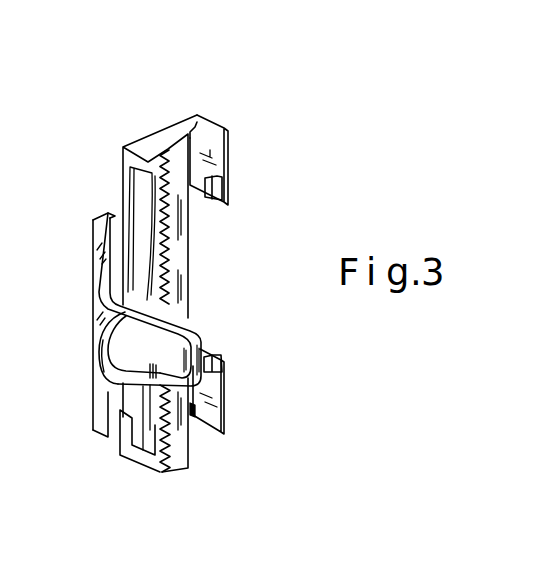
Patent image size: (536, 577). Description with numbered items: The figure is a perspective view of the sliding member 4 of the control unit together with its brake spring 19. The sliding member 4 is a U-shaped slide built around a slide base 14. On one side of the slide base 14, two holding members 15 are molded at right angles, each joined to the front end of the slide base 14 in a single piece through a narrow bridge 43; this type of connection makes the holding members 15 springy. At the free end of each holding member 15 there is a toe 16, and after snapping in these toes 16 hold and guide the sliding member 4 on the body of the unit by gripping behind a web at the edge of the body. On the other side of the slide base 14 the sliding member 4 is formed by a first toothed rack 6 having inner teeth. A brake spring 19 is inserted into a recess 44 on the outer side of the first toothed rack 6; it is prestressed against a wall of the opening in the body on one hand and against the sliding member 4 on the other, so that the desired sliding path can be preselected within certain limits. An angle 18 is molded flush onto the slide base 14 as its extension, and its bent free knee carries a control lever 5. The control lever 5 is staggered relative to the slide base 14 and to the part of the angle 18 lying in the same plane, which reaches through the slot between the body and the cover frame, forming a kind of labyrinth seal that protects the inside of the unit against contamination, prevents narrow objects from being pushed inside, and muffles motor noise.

The sliding member 4 is at (95, 342).
The control lever 5 is at (128, 358).
The first toothed rack 6 is at (164, 272).
The slide base 14 is at (175, 145).
The holding members 15 is at (210, 147).
The toe 16 is at (215, 192).
The angle 18 is at (104, 280).
The brake spring 19 is at (143, 192).
The narrow bridge 43 is at (193, 129).
The recess 44 is at (126, 455).